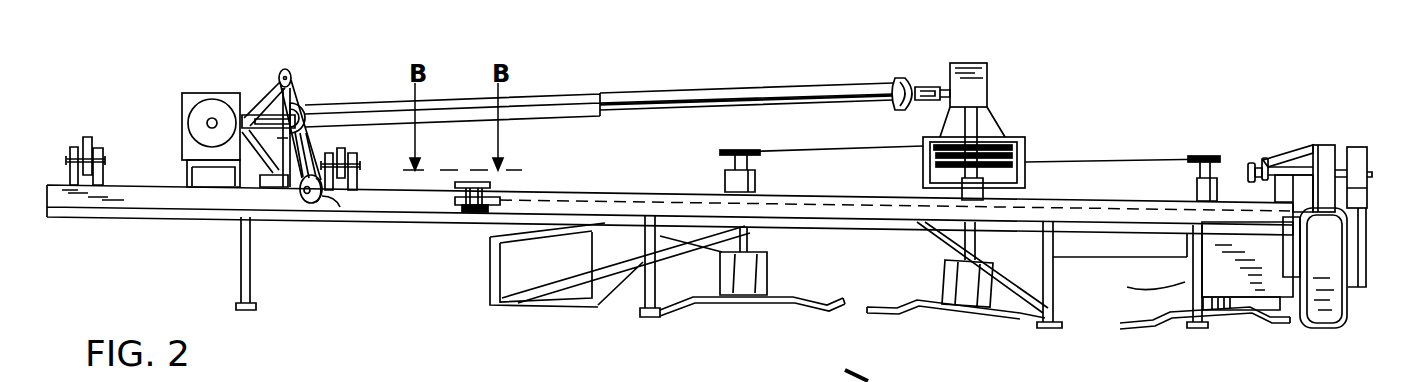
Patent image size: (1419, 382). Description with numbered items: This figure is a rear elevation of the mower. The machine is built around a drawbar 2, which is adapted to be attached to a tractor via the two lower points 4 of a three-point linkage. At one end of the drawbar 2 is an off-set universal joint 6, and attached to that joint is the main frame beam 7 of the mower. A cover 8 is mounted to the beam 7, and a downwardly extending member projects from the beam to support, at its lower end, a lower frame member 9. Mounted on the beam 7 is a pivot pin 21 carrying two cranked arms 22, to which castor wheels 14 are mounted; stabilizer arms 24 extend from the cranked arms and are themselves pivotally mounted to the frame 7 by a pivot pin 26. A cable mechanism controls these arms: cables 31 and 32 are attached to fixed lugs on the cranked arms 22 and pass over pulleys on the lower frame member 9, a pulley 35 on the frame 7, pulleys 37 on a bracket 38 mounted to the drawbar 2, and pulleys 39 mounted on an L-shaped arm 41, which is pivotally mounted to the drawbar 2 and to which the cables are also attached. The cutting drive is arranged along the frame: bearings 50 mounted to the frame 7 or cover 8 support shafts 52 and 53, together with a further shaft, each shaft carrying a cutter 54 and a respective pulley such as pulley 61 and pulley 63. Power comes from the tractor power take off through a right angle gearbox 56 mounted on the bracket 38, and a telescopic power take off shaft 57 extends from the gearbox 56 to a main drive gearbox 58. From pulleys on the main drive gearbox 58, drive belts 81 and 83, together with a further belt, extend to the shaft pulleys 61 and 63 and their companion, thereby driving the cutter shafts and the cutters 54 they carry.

The drawbar 2 is at (128, 188).
The lower points 4 is at (87, 138).
The off-set universal joint 6 is at (488, 182).
The main frame beam 7 is at (628, 190).
The cover 8 is at (557, 190).
The lower frame member 9 is at (1357, 284).
The castor wheels 14 is at (1350, 307).
The pivot pin 21 is at (1300, 158).
The cranked arms 22 is at (1355, 161).
The stabilizer arms 24 is at (1307, 143).
The pivot pin 26 is at (1265, 160).
The cable 31 is at (313, 142).
The cable 32 is at (310, 153).
The pulley 35 is at (458, 203).
The pulleys 37 is at (300, 220).
The bracket 38 is at (322, 196).
The pulleys 39 is at (279, 74).
The L-shaped arm 41 is at (290, 68).
The bearings 50 is at (760, 184).
The shaft 52 is at (985, 247).
The shaft 53 is at (1198, 154).
The cutter 54 is at (808, 293).
The right angle gearbox 56 is at (190, 93).
The telescopic power take off shaft 57 is at (628, 102).
The main drive gearbox 58 is at (988, 72).
The pulley 61 is at (764, 150).
The pulley 63 is at (1187, 157).
The drive belt 81 is at (888, 145).
The drive belt 83 is at (1092, 160).